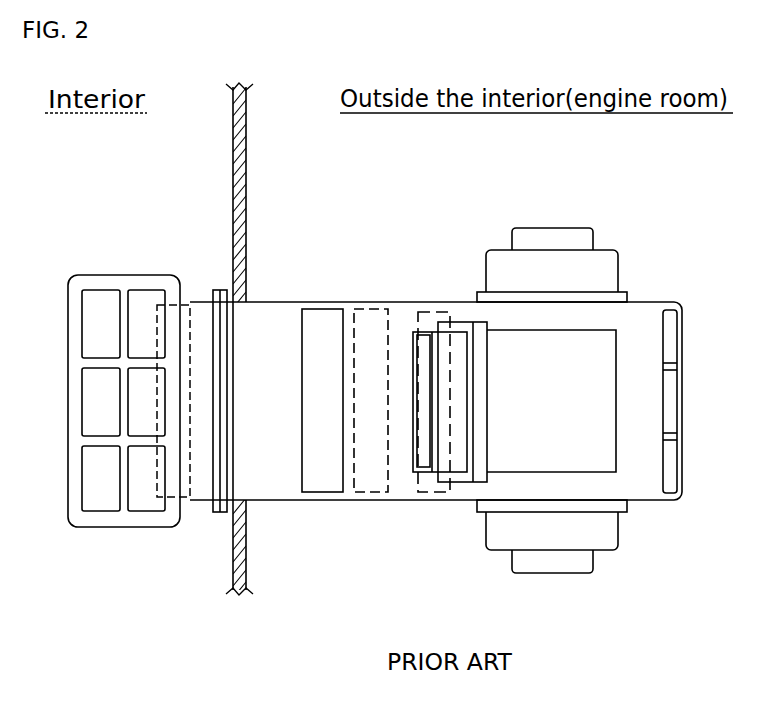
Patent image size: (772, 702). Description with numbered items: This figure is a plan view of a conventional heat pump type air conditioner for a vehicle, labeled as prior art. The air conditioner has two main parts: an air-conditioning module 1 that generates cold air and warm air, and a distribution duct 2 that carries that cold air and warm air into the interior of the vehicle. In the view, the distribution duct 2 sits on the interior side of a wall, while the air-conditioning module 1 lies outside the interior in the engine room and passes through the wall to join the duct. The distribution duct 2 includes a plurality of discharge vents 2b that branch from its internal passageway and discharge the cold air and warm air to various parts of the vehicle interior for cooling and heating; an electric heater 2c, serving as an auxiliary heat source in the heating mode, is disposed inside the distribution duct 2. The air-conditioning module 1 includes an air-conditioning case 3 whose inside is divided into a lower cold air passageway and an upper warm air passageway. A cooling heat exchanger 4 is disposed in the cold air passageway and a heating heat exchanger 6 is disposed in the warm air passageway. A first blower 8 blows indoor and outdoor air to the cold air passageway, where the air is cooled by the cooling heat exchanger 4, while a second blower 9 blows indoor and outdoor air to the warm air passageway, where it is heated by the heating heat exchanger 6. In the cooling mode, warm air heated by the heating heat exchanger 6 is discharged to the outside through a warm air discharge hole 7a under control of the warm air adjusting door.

The air-conditioning module 1 is at (436, 401).
The distribution duct 2 is at (112, 375).
The discharge vents 2b is at (148, 497).
The electric heater 2c is at (152, 312).
The air-conditioning case 3 is at (400, 302).
The cooling heat exchanger 4 is at (434, 494).
The heating heat exchanger 6 is at (371, 497).
The warm air discharge hole 7a is at (323, 326).
The first blower 8 is at (553, 528).
The second blower 9 is at (549, 275).